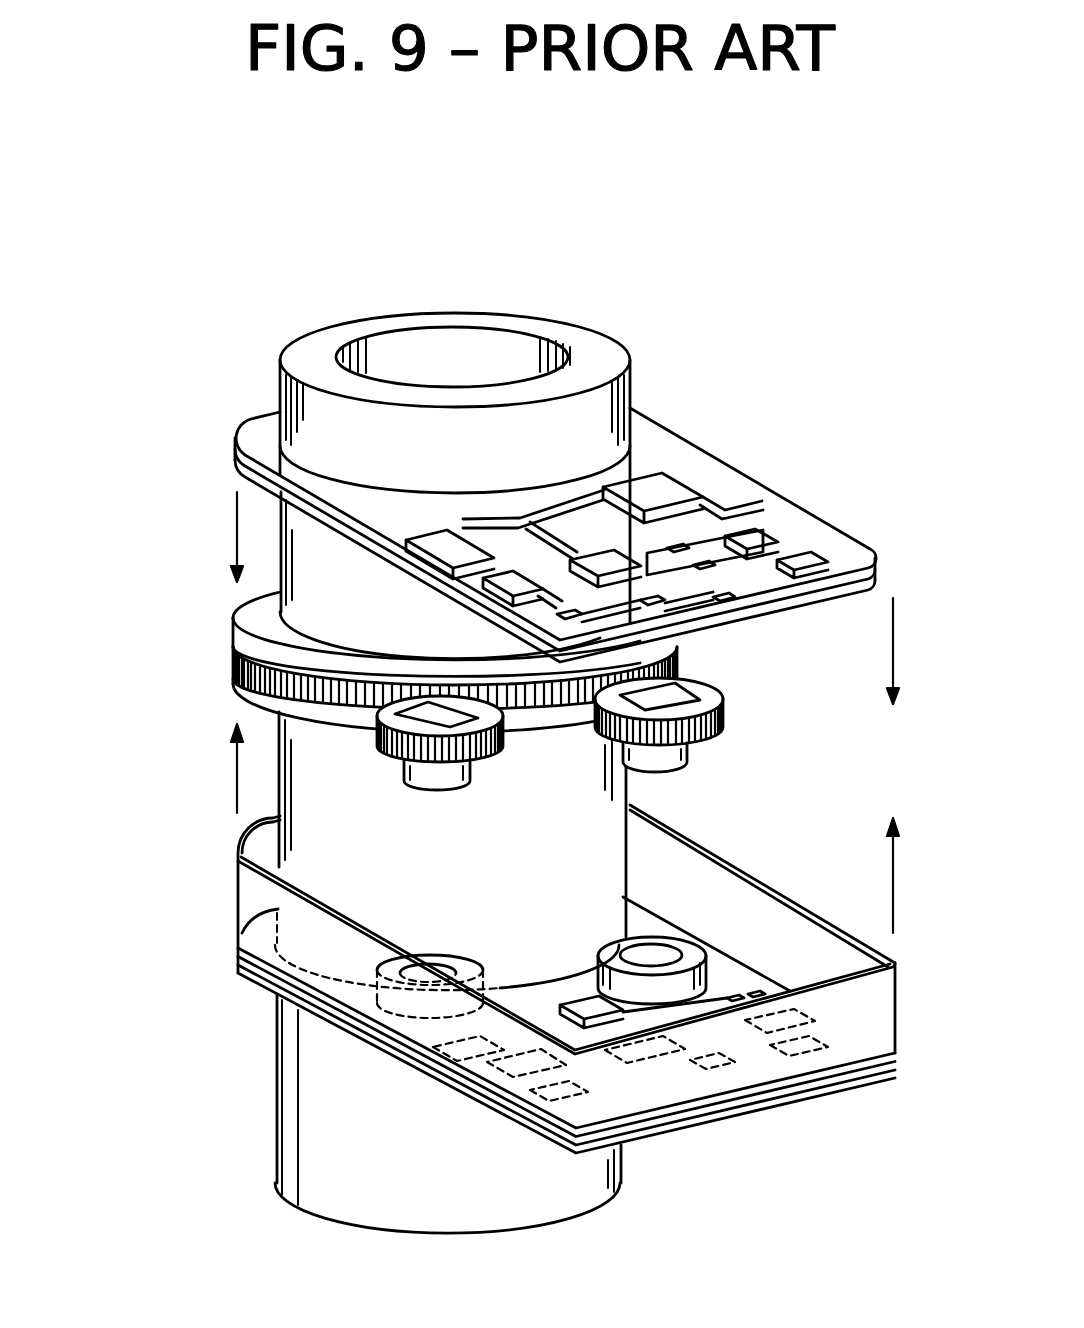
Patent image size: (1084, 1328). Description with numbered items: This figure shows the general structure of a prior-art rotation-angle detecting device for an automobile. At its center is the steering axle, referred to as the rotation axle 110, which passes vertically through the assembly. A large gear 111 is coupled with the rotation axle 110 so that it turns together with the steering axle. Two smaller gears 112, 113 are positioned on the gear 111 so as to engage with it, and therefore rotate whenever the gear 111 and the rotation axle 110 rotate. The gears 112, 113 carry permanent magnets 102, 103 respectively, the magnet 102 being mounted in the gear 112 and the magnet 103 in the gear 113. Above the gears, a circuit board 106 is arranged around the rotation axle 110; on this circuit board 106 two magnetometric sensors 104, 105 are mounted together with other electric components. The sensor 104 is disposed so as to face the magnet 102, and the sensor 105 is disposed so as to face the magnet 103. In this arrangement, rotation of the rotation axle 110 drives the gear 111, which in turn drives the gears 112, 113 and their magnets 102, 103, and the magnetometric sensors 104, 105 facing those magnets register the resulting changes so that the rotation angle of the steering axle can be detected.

The rotation axle 110 is at (588, 347).
The magnetometric sensor 104 is at (428, 538).
The magnetometric sensor 105 is at (668, 494).
The circuit board 106 is at (517, 485).
The gear 111 is at (256, 608).
The gear 112 is at (397, 718).
The gear 113 is at (718, 692).
The permanent magnet 102 is at (452, 720).
The permanent magnet 103 is at (655, 696).